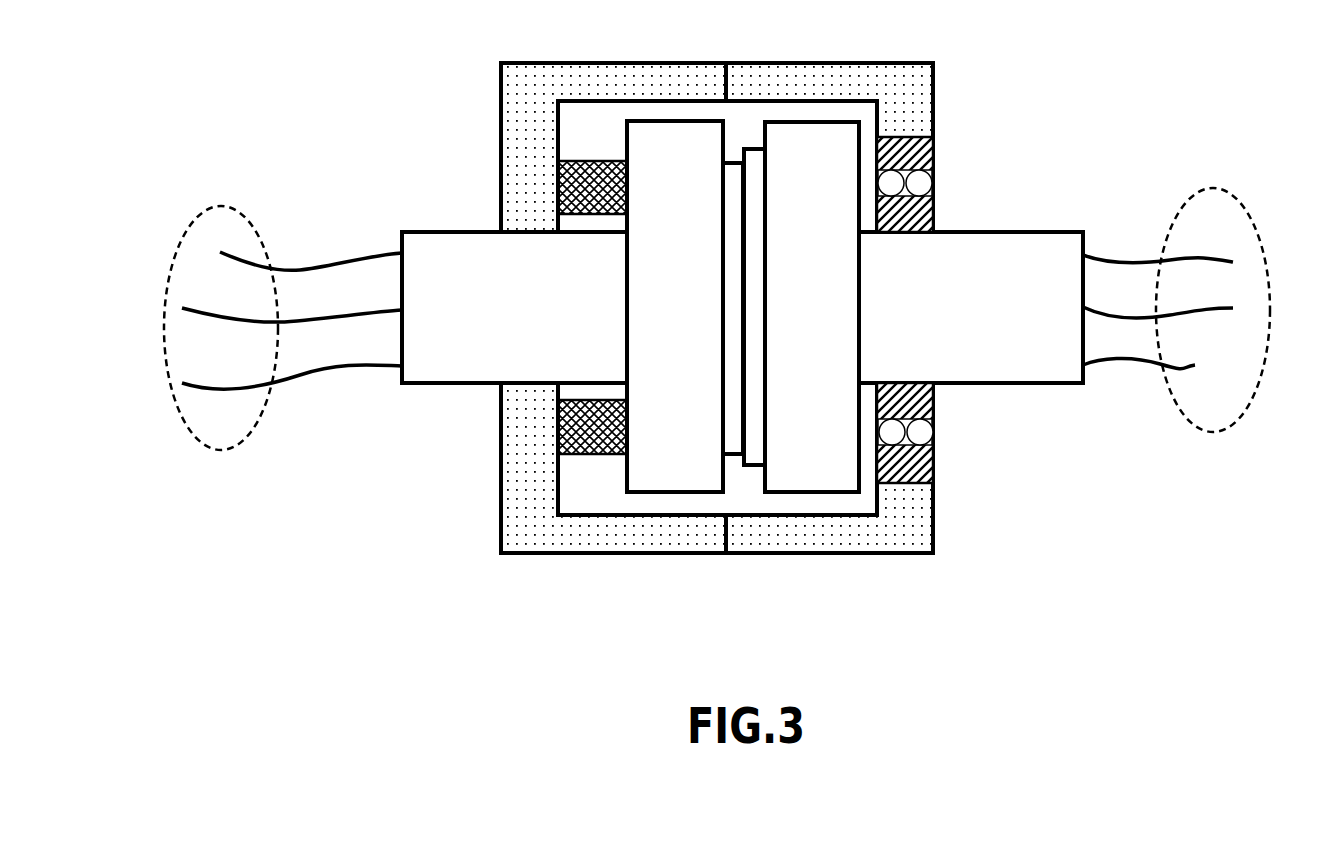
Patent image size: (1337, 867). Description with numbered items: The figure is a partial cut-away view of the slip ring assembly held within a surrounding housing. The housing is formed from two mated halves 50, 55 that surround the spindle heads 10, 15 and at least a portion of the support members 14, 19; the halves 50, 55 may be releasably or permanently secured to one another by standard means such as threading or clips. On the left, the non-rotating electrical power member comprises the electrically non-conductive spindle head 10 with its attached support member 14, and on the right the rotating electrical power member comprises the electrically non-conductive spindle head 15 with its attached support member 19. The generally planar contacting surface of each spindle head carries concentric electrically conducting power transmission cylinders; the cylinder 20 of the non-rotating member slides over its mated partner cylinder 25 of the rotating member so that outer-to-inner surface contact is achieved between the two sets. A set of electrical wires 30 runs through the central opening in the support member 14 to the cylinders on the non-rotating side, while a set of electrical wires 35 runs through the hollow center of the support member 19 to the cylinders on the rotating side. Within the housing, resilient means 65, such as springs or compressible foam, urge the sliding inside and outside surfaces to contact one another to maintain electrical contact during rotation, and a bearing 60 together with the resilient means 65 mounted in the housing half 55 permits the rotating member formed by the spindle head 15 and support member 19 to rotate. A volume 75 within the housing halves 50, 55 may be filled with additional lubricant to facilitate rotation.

The spindle head 10 is at (668, 440).
The support member 14 is at (448, 254).
The spindle head 15 is at (838, 437).
The support member 19 is at (1008, 272).
The power transmission cylinder 20 is at (733, 186).
The power transmission cylinder 25 is at (754, 178).
The electrical wires 30 is at (218, 205).
The electrical wires 35 is at (1215, 187).
The housing half 50 is at (653, 533).
The housing half 55 is at (840, 533).
The bearing 60 is at (933, 442).
The resilient means 65 is at (597, 177).
The volume 75 is at (752, 500).